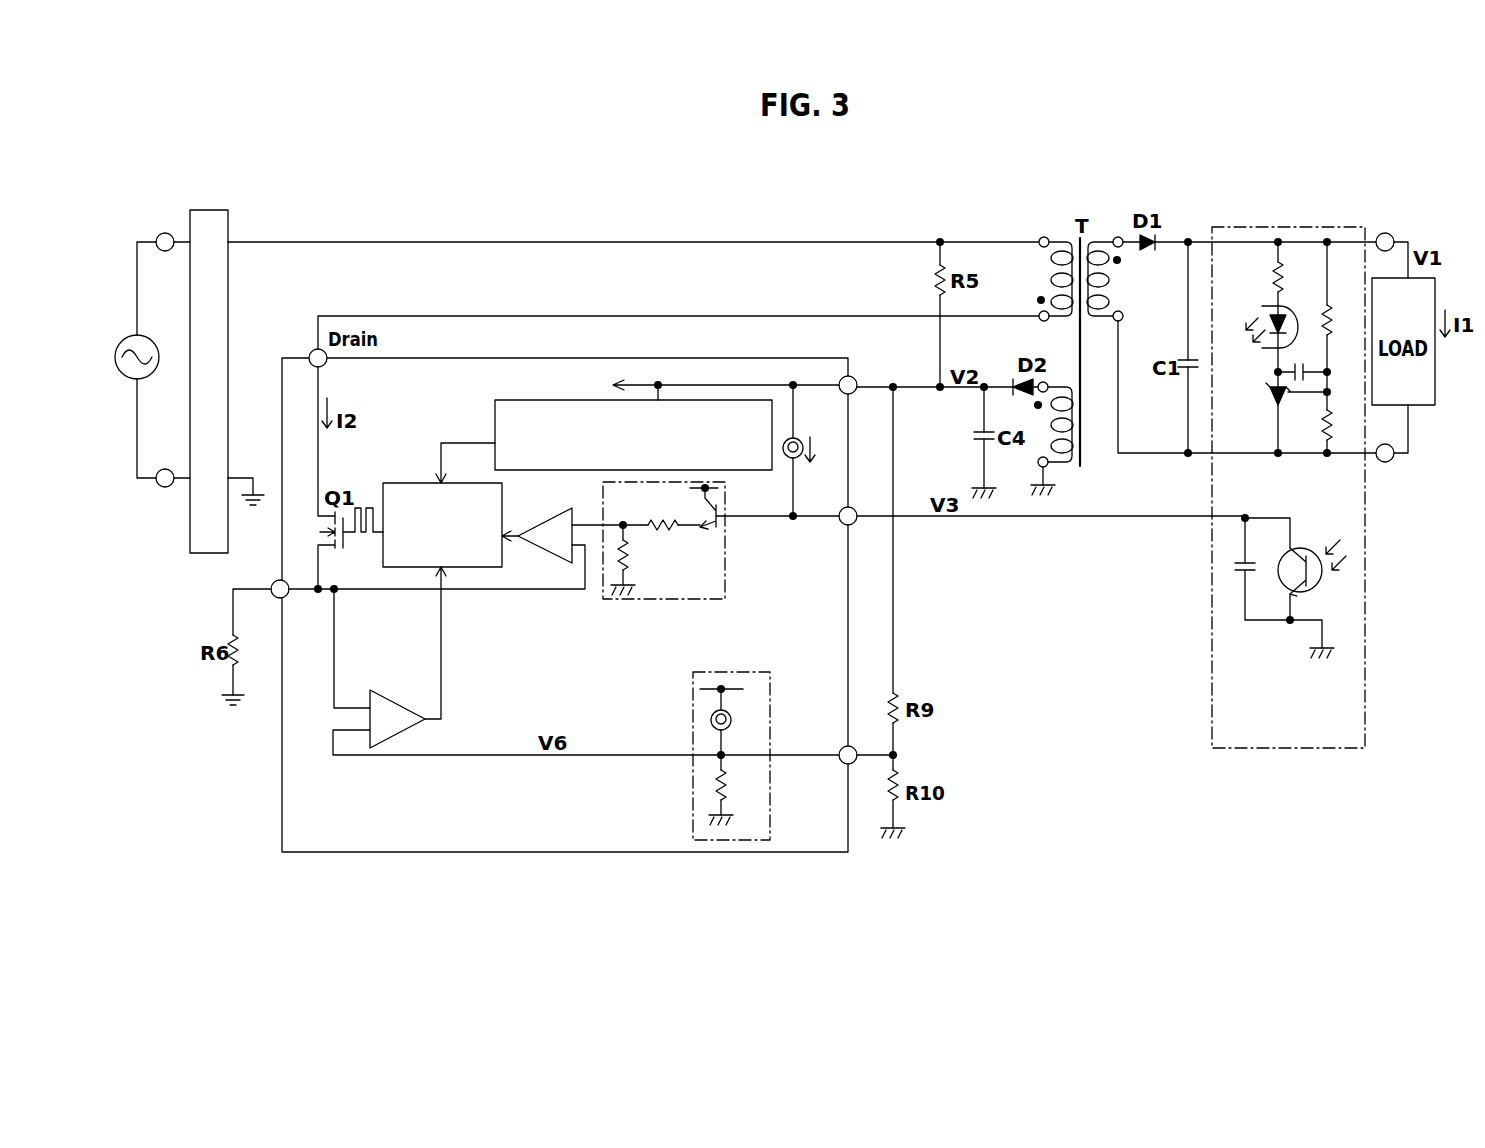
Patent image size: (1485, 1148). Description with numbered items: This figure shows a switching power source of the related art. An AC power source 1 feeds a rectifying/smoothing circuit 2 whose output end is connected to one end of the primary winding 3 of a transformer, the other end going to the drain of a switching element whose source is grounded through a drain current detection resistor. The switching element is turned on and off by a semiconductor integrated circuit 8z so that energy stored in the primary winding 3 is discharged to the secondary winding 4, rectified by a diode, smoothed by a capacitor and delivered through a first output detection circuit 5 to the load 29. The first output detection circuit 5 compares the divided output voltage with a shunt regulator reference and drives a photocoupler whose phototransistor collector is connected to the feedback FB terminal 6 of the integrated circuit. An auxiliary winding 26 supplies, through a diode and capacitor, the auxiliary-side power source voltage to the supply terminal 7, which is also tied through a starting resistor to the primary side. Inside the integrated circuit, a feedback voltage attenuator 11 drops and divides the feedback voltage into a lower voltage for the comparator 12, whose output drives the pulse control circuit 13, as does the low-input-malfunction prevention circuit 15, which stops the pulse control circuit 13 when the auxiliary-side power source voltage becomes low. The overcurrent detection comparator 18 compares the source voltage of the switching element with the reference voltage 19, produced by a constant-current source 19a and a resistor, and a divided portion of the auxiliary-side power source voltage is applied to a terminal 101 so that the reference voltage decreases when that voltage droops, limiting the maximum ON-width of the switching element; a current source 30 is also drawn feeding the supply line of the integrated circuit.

The AC power source 1 is at (140, 336).
The rectifying/smoothing circuit 2 is at (215, 210).
The primary winding 3 is at (1044, 286).
The secondary winding 4 is at (1112, 294).
The first output detection circuit 5 is at (1242, 750).
The feedback FB terminal 6 is at (856, 526).
The Vcc terminal 7 is at (858, 384).
The semiconductor integrated circuit 8z is at (512, 854).
The feedback voltage attenuator 11 is at (654, 600).
The comparator 12 is at (545, 519).
The pulse control circuit 13 is at (410, 482).
The low-input-malfunction prevention circuit 15 is at (495, 422).
The overcurrent detection comparator 18 is at (398, 702).
The reference voltage 19 is at (705, 728).
The constant-current source 19a is at (710, 720).
The auxiliary winding 26 is at (278, 578).
The load 29 is at (1412, 408).
The current source 30 is at (800, 436).
The terminal 101 is at (839, 751).